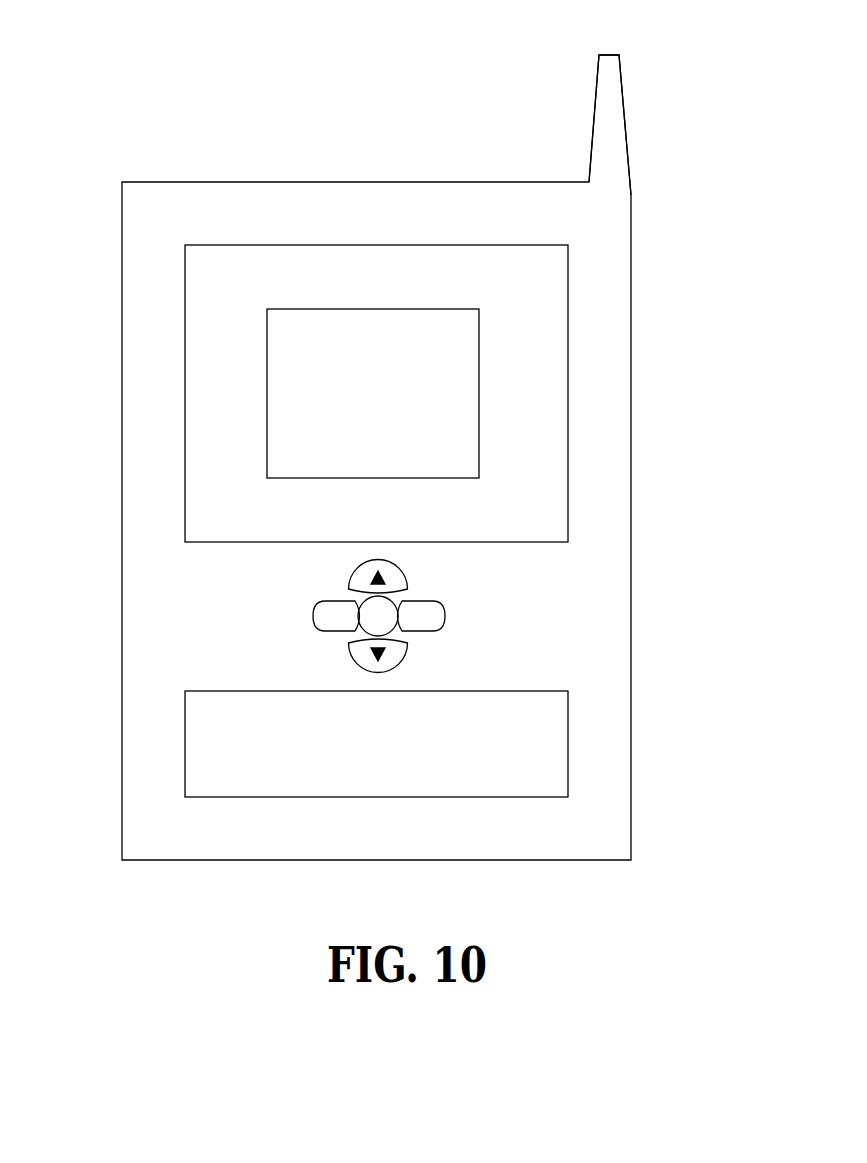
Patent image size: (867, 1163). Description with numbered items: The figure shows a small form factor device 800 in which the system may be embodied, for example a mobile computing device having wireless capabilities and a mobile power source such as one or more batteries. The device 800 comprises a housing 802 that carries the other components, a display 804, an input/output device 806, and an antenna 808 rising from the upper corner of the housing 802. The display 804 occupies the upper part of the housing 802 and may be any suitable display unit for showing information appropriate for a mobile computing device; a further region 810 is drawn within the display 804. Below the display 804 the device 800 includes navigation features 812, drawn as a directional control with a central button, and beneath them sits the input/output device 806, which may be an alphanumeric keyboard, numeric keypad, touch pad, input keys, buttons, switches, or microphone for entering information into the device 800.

The small form factor device 800 is at (131, 65).
The housing 802 is at (631, 523).
The display 804 is at (568, 281).
The input/output (I/O) device 806 is at (568, 738).
The antenna 808 is at (593, 113).
The display window 810 is at (479, 402).
The navigation features 812 is at (482, 607).